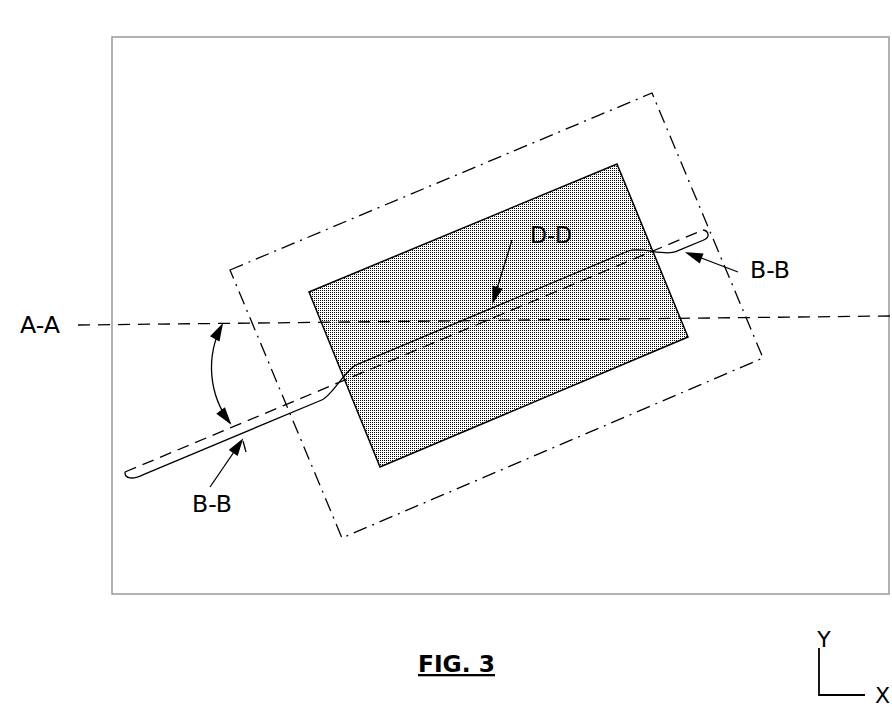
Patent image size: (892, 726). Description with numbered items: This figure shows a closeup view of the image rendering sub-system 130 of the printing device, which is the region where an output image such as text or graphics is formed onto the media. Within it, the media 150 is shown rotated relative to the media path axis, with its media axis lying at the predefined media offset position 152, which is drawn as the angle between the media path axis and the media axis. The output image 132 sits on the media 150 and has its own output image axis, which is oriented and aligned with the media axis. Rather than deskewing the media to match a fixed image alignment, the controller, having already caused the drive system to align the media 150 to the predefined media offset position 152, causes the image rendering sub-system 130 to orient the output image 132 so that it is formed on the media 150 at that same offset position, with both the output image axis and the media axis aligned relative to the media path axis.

The image rendering sub-system 130 is at (500, 315).
The output image 132 is at (498, 315).
The media 150 is at (496, 315).
The predefined media offset position 152 is at (196, 374).